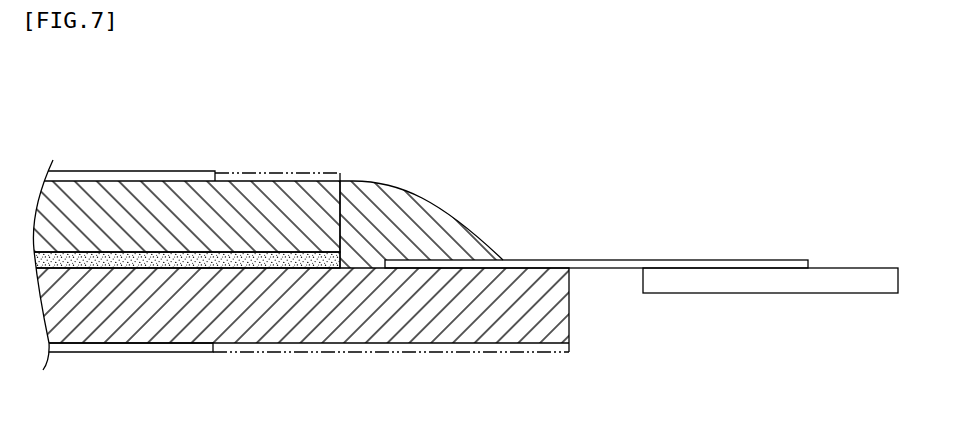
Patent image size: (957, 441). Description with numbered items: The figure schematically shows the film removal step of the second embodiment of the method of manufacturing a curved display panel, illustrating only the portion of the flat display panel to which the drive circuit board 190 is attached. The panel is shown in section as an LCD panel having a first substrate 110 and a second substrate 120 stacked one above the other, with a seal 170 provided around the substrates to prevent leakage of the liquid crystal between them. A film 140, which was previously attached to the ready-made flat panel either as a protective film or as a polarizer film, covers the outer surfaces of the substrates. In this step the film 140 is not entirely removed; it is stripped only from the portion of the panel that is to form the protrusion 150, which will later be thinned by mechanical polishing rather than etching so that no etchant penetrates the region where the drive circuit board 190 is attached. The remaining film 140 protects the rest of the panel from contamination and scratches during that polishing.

The first substrate 110 is at (113, 320).
The second substrate 120 is at (165, 213).
The film 140 is at (118, 177).
The protrusion 150 is at (300, 237).
The seal 170 is at (428, 230).
The drive circuit board 190 is at (783, 283).